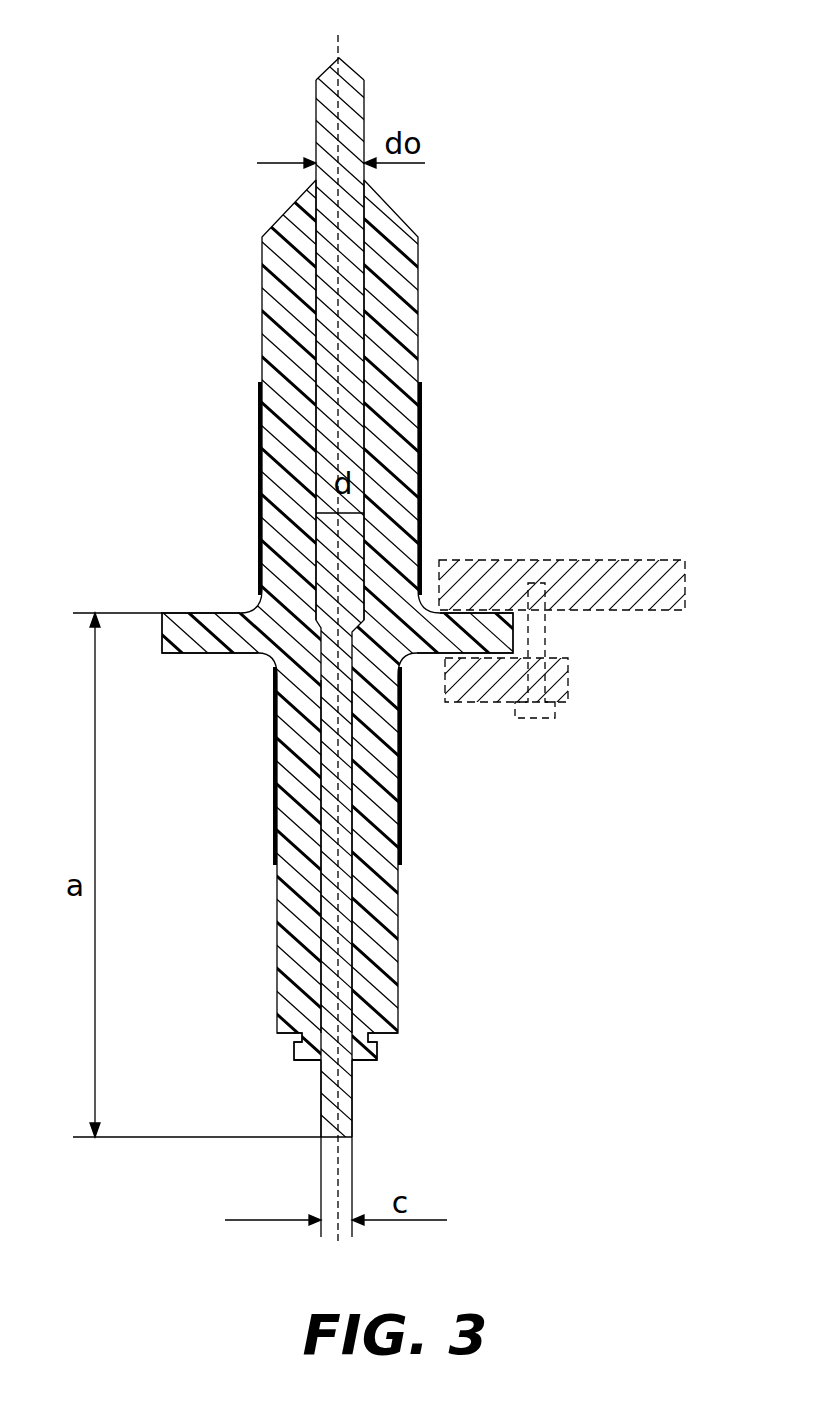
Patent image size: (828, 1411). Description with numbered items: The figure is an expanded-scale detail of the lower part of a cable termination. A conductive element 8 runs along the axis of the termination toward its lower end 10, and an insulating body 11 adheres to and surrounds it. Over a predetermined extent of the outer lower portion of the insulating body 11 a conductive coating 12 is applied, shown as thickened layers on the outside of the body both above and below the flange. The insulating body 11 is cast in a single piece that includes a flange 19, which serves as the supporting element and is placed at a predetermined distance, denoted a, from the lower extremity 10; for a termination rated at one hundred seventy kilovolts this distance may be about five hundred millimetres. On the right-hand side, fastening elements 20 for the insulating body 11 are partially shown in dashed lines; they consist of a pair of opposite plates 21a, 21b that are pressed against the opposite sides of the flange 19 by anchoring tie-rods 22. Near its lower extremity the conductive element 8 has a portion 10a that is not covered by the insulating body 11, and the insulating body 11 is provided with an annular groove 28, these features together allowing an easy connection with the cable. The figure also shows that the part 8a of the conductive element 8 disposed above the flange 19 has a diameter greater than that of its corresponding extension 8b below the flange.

The conductive element 8 is at (373, 61).
The part of conductive element above flange 8a is at (353, 322).
The extension of conductive element under flange 8b is at (347, 926).
The lower end of termination 10 is at (393, 1073).
The uncovered portion of conductive element 10a is at (320, 1105).
The insulating body 11 is at (262, 305).
The conductive coating 12 is at (421, 420).
The flange 19 is at (200, 655).
The fastening elements 20 is at (562, 492).
The plate 21a is at (568, 681).
The plate 21b is at (658, 575).
The anchoring tie-rods 22 is at (536, 713).
The annular groove 28 is at (392, 1043).